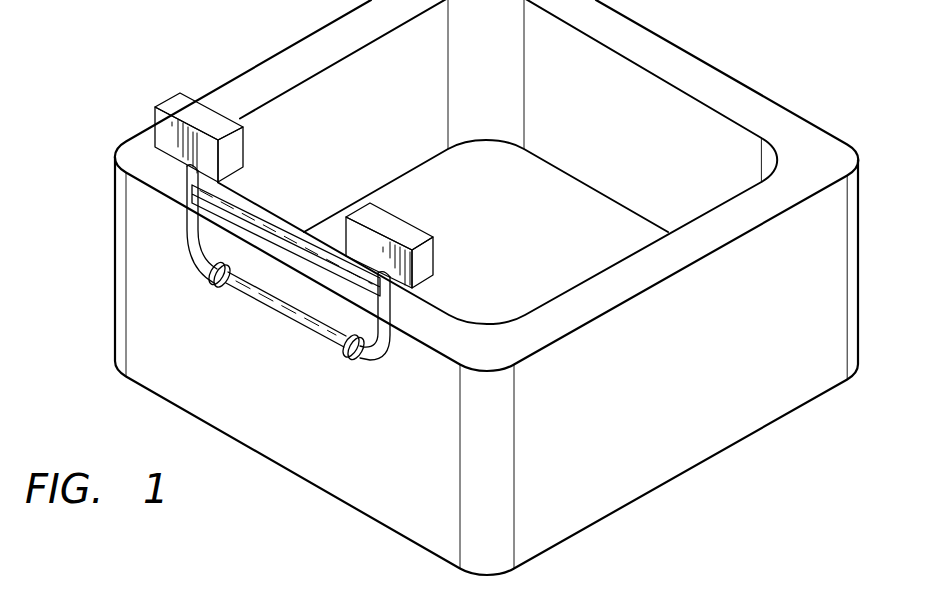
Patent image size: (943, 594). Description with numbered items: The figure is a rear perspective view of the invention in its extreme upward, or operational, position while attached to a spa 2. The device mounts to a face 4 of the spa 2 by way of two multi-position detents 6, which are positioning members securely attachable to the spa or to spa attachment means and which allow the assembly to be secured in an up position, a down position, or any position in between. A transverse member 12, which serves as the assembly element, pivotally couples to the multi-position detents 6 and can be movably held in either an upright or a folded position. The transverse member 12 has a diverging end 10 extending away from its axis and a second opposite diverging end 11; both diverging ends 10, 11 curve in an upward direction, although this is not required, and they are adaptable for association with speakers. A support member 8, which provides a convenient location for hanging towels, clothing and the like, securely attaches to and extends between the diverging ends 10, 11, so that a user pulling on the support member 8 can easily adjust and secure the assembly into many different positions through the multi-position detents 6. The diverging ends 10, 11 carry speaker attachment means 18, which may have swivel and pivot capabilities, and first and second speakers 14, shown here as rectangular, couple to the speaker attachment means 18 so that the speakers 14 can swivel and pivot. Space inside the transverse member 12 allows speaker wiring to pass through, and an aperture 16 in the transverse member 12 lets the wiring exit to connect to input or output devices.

The spa 2 is at (514, 224).
The face 4 is at (163, 312).
The multi-position detents 6 is at (214, 288).
The support member 8 is at (276, 228).
The diverging end 10 is at (395, 318).
The second opposite diverging end 11 is at (186, 215).
The transverse member 12 is at (318, 334).
The first and second speakers 14 is at (192, 100).
The aperture 16 is at (273, 308).
The speaker attachment means 18 is at (188, 168).